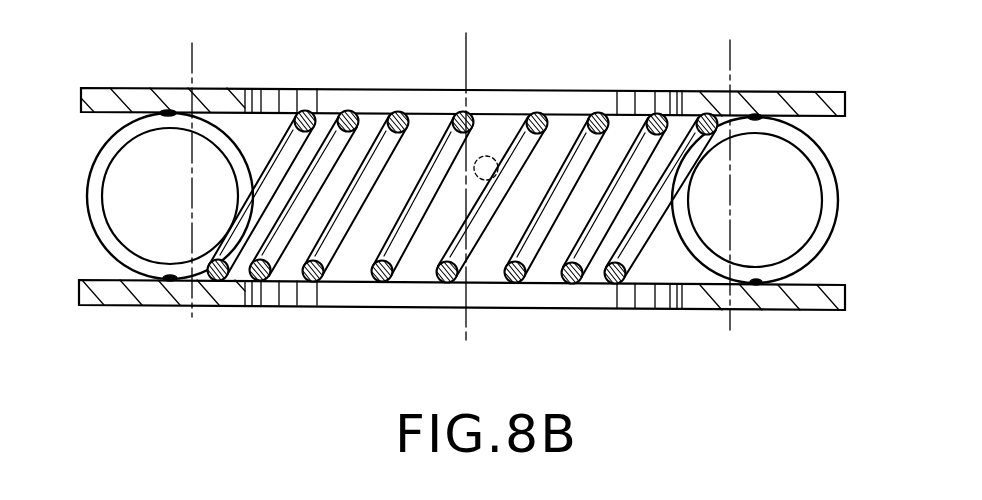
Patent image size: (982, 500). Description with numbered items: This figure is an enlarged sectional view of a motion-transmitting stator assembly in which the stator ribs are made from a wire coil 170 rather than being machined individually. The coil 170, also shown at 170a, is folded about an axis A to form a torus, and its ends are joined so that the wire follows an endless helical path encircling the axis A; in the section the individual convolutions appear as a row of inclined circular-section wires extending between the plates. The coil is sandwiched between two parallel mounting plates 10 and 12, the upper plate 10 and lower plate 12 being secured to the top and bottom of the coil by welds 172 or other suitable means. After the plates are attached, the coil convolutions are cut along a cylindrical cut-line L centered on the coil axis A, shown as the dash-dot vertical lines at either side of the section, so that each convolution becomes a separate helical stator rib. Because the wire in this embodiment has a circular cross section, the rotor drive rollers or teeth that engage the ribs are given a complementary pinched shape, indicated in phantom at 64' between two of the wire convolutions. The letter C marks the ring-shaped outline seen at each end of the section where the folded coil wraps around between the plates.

The mounting plate 10 is at (108, 98).
The mounting plate 12 is at (112, 297).
The weld 172 is at (169, 284).
The wire coil 170 is at (398, 115).
The wire coil 170a is at (632, 63).
The rotor drive roller 64' is at (501, 118).
The axis A is at (467, 60).
The cut-line L is at (192, 72).
The ring C is at (757, 199).